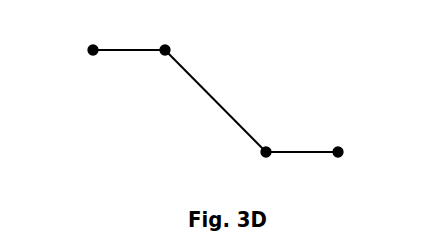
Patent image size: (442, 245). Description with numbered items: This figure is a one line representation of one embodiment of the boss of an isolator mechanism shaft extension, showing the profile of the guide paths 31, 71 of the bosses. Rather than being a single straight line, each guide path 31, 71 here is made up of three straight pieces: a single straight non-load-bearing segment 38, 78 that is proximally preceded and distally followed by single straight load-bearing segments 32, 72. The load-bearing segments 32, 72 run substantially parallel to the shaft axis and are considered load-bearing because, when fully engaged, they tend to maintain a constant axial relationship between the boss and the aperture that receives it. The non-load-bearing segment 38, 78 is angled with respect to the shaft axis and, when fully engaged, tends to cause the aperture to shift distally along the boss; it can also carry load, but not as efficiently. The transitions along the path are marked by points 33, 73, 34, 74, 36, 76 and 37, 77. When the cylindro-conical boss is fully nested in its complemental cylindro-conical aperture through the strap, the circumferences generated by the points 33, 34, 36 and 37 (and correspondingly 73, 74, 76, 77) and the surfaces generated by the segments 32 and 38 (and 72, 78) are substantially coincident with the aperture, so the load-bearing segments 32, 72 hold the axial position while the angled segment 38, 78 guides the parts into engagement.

The guide path 31 is at (110, 152).
The guide path 71 is at (162, 133).
The straight load-bearing segment 32 is at (214, 118).
The straight load-bearing segment 72 is at (128, 51).
The point 33 is at (56, 34).
The point 73 is at (92, 46).
The point 34 is at (228, 162).
The point 74 is at (263, 156).
The point 36 is at (201, 37).
The point 76 is at (167, 47).
The point 37 is at (373, 140).
The point 77 is at (340, 149).
The straight non-load-bearing segment 38 is at (231, 101).
The straight non-load-bearing segment 78 is at (216, 100).